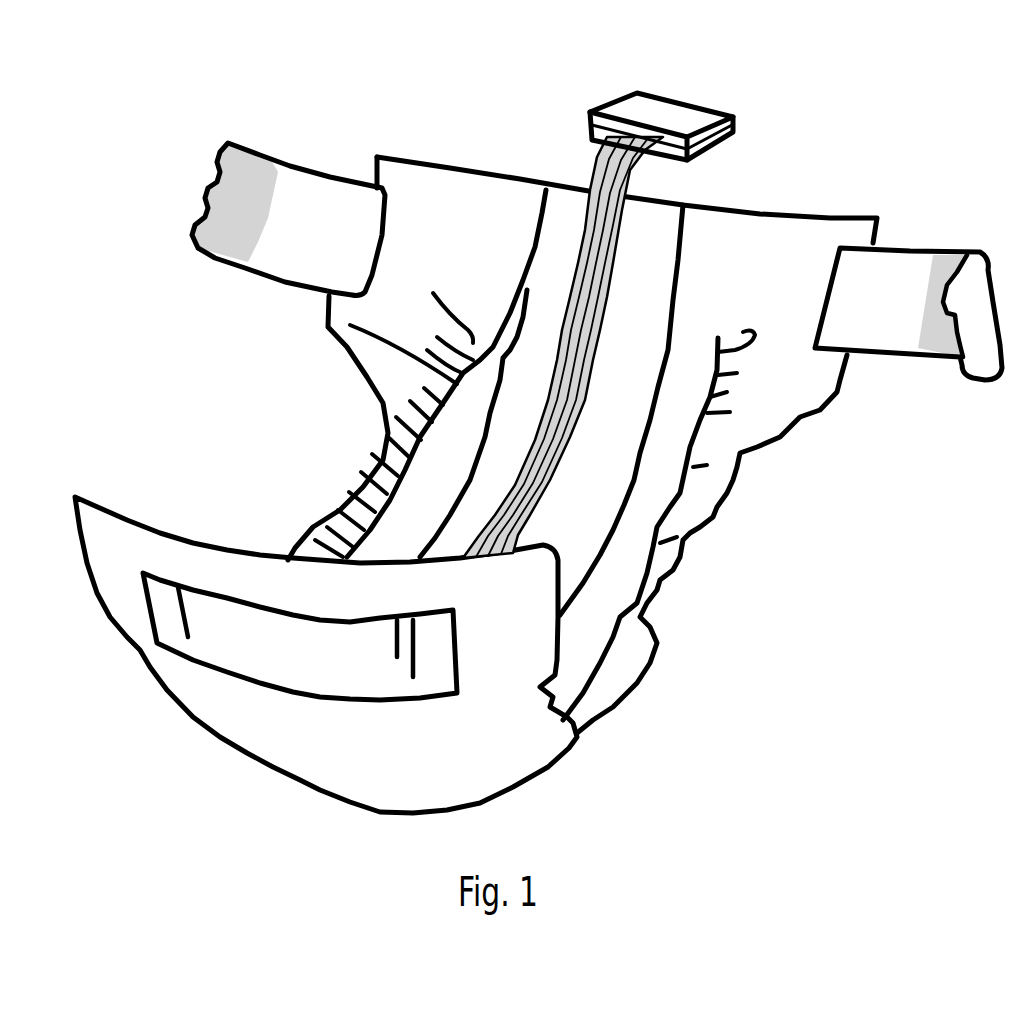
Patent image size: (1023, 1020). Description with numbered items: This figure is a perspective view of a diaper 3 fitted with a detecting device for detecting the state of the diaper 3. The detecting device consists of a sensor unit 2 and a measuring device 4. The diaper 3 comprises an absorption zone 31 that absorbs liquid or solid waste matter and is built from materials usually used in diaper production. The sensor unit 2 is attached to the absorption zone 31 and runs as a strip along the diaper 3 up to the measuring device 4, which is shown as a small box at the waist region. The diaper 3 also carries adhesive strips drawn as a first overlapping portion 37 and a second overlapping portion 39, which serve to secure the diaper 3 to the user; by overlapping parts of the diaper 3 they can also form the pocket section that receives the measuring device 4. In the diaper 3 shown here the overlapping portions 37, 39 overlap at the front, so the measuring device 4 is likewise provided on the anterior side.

The sensor unit 2 is at (578, 347).
The diaper 3 is at (727, 270).
The measuring device 4 is at (670, 130).
The absorption zone 31 is at (588, 490).
The first overlapping portion 37 is at (240, 180).
The second overlapping portion 39 is at (968, 307).